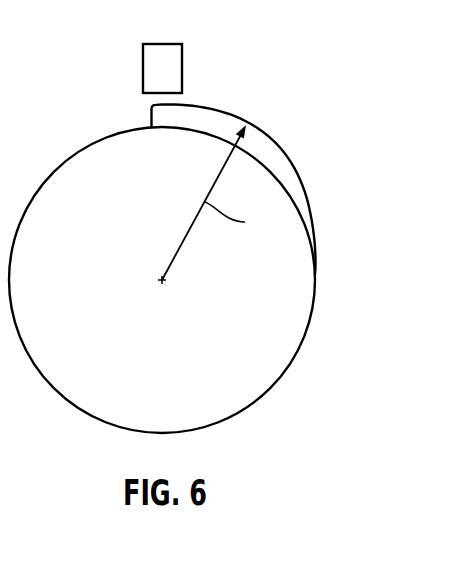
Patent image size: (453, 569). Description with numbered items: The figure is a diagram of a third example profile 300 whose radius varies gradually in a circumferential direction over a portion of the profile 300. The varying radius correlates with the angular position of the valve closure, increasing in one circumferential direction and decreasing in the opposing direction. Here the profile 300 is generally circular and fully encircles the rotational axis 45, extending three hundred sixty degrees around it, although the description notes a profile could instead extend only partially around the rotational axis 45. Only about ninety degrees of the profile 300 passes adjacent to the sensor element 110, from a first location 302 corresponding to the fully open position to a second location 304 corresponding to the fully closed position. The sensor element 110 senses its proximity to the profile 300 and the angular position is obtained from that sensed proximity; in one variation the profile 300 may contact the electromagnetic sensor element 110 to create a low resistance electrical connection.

The profile 300 is at (208, 248).
The first location 302 is at (313, 234).
The second location 304 is at (149, 119).
The sensor element 110 is at (172, 65).
The rotational axis 45 is at (165, 282).